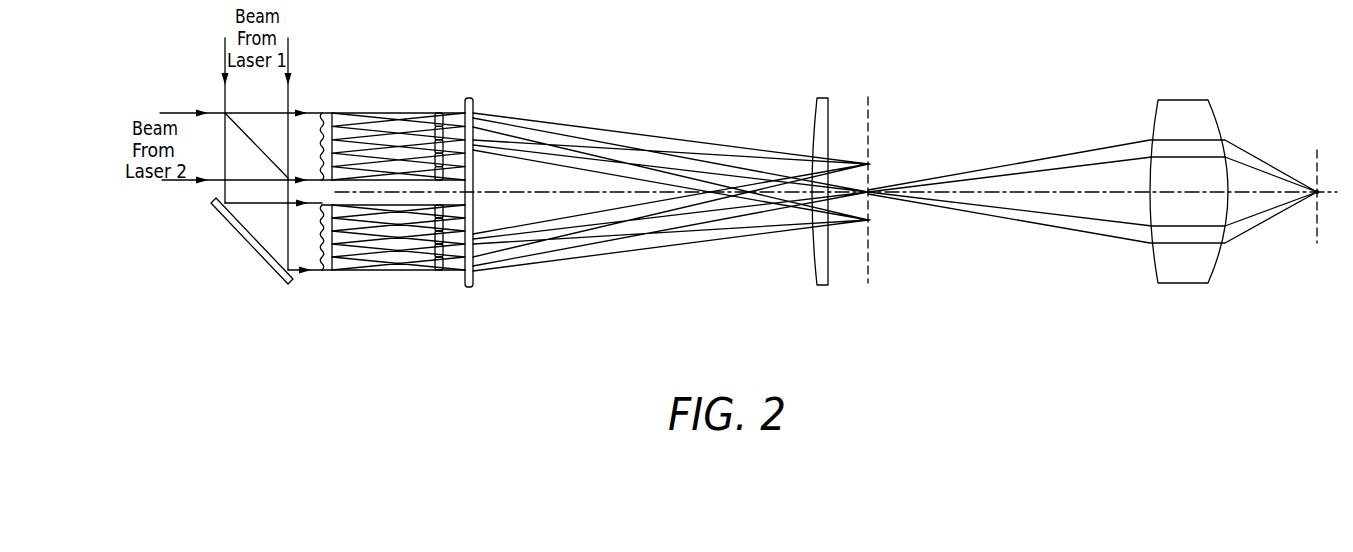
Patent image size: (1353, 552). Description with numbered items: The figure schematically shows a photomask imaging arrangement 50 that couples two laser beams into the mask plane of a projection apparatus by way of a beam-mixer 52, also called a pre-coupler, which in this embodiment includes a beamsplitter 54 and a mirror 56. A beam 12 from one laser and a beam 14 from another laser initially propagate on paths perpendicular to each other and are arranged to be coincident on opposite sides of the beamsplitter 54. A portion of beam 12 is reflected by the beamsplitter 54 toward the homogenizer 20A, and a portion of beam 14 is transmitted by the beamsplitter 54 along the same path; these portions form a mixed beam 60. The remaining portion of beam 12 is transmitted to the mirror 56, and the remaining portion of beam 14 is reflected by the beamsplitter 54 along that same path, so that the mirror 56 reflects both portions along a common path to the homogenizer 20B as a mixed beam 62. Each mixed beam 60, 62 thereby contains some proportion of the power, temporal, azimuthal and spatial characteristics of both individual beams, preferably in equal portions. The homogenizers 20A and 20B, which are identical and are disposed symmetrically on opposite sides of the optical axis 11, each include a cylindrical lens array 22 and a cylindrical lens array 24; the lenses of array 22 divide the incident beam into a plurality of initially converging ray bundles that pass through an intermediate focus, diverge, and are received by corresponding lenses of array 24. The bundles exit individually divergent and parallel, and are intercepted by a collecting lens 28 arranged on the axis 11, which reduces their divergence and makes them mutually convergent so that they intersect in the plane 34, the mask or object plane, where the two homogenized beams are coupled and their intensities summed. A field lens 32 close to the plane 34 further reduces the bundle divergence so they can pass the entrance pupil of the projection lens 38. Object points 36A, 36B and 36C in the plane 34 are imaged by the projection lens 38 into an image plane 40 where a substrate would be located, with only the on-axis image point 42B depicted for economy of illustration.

The optical axis 11 is at (571, 200).
The beam 12 is at (222, 66).
The beam 14 is at (182, 186).
The homogenizer 20A is at (393, 65).
The homogenizer 20B is at (396, 318).
The cylindrical lens array 22 is at (340, 110).
The cylindrical lens array 24 is at (438, 110).
The collecting lens 28 is at (475, 105).
The field lens 32 is at (818, 150).
The plane 34 is at (872, 125).
The object point 36A is at (872, 162).
The object point 36B is at (872, 222).
The object point 36C is at (872, 226).
The projection lens 38 is at (1155, 112).
The image plane 40 is at (1315, 237).
The image point 42B is at (1316, 190).
The photomask imaging arrangement 50 is at (838, 340).
The beam-mixer 52 is at (240, 295).
The beamsplitter 54 is at (242, 127).
The mirror 56 is at (240, 227).
The mixed beam 60 is at (309, 110).
The mixed beam 62 is at (311, 283).